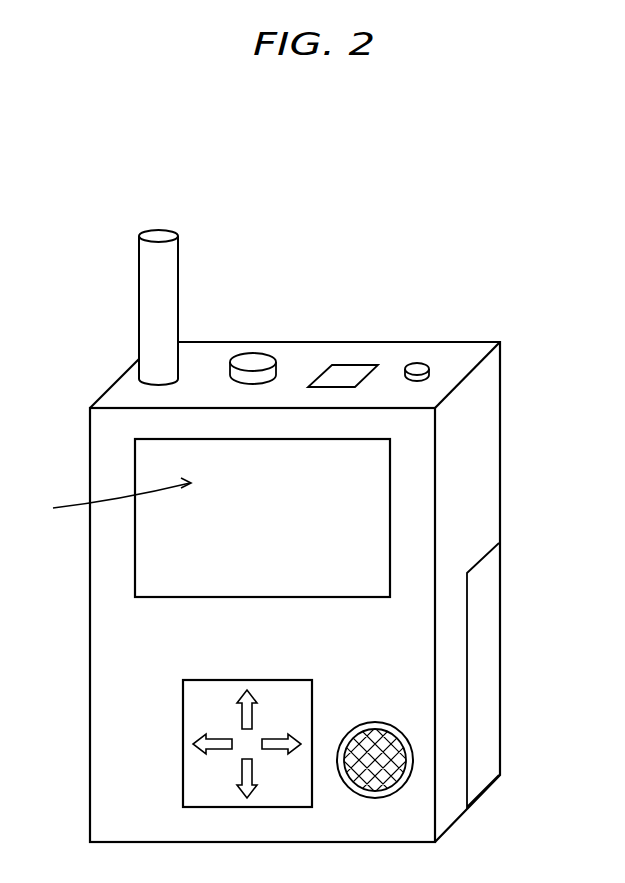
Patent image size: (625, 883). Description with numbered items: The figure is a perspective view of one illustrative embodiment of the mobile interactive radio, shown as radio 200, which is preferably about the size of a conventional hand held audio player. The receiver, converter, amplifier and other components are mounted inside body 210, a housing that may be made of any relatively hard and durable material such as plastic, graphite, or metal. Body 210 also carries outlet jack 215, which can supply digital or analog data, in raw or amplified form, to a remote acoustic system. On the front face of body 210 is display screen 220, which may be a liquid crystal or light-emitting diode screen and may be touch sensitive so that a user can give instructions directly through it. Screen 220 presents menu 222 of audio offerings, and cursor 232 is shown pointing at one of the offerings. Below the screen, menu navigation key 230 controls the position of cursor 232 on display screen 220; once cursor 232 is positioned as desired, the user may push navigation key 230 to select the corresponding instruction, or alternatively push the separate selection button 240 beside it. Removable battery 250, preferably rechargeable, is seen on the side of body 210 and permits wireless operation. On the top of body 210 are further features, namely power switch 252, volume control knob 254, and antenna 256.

The radio 200 is at (450, 218).
The body 210 is at (96, 773).
The outlet jack 215 is at (417, 364).
The display screen 220 is at (167, 598).
The menu 222 is at (296, 488).
The menu navigation key 230 is at (287, 680).
The cursor 232 is at (104, 500).
The selection button 240 is at (390, 722).
The removable battery 250 is at (493, 663).
The power switch 252 is at (352, 363).
The volume control knob 254 is at (255, 357).
The antenna 256 is at (147, 270).